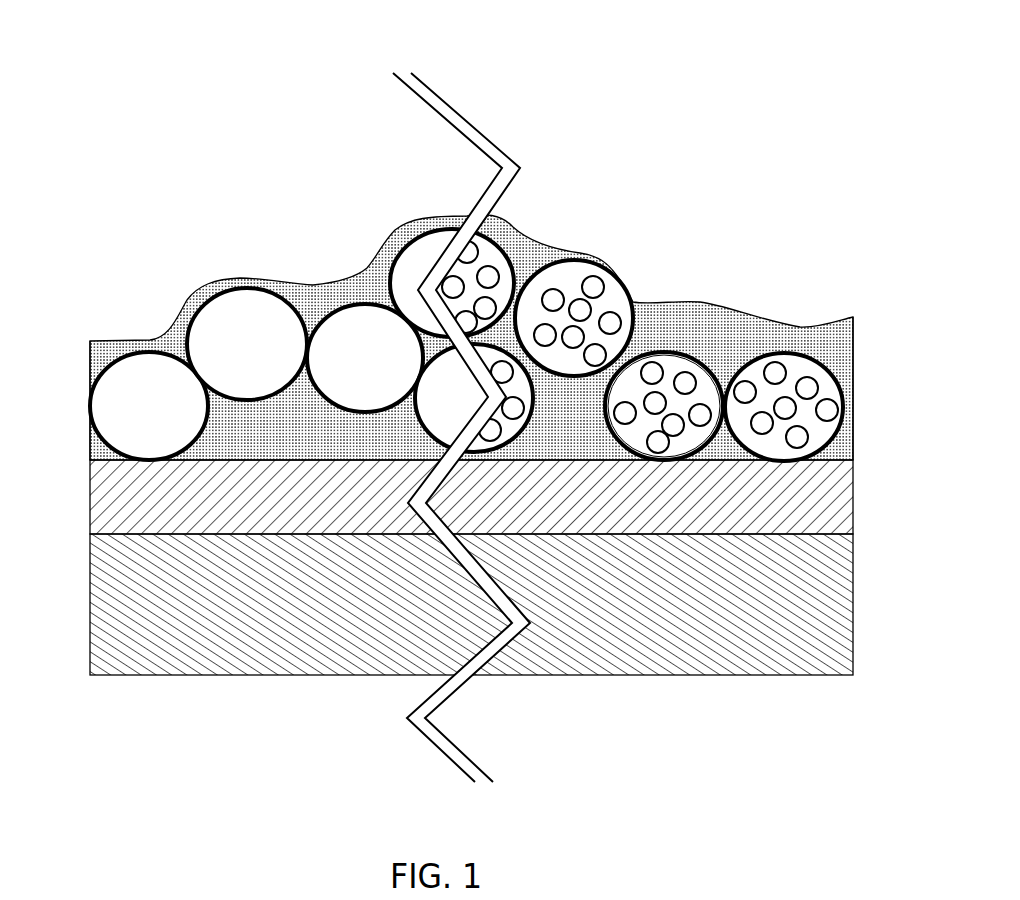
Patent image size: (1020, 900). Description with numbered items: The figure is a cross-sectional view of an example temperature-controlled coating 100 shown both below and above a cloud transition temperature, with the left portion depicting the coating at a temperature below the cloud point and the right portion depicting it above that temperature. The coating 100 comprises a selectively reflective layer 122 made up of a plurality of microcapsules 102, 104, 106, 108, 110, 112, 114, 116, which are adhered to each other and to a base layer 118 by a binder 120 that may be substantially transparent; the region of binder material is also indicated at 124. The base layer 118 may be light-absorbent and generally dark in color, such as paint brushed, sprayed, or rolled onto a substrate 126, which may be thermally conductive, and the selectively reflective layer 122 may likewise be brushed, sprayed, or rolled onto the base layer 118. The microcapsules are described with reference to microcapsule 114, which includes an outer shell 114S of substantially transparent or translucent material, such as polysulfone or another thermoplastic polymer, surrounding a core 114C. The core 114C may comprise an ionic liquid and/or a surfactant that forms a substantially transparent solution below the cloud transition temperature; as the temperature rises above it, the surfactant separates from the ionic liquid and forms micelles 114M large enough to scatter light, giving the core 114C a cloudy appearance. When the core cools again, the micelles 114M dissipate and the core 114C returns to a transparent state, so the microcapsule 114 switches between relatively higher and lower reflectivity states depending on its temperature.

The temperature-controlled coating 100 is at (458, 396).
The microcapsule 102 is at (138, 373).
The microcapsule 104 is at (232, 313).
The microcapsule 106 is at (348, 333).
The microcapsule 108 is at (432, 257).
The microcapsule 110 is at (475, 407).
The microcapsule 112 is at (570, 278).
The microcapsule 114 is at (703, 351).
The outer shell 114S is at (638, 352).
The micelles 114M is at (666, 352).
The core 114C is at (710, 387).
The microcapsule 116 is at (812, 363).
The base layer 118 is at (113, 502).
The binder 120 is at (523, 238).
The selectively reflective layer 122 is at (78, 218).
The matrix material 124 is at (848, 446).
The substrate 126 is at (832, 600).